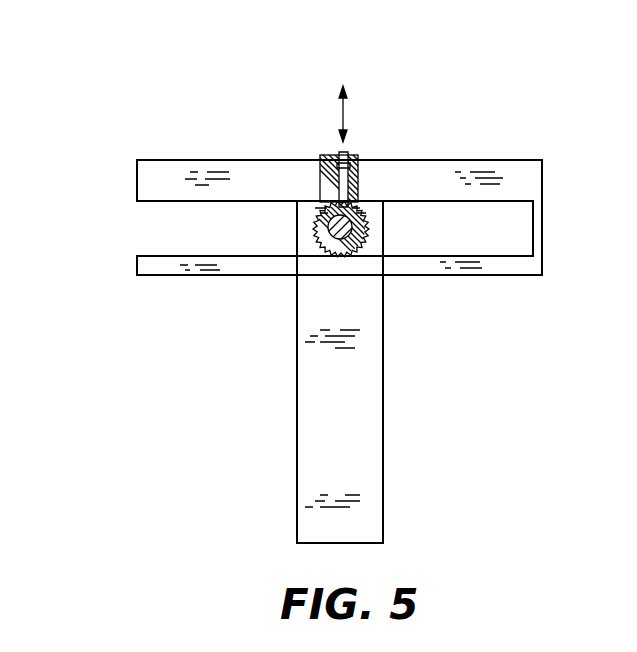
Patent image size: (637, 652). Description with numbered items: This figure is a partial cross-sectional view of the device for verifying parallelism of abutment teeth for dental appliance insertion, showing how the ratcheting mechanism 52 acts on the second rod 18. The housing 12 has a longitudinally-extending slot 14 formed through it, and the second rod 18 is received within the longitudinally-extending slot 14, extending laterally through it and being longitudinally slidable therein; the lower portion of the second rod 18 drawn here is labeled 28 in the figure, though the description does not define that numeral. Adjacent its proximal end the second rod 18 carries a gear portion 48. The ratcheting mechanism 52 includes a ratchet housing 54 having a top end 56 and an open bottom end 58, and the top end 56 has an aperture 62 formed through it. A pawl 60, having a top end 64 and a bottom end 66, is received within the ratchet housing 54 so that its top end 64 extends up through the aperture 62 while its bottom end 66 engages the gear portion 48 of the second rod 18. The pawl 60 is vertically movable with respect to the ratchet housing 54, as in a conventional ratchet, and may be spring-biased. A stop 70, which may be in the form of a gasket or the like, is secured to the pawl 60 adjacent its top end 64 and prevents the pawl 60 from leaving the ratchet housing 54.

The housing 12 is at (167, 160).
The longitudinally-extending slot 14 is at (136, 225).
The second rod 18 is at (330, 243).
The post 28 is at (385, 530).
The gear portion 48 is at (370, 232).
The ratcheting mechanism 52 is at (358, 165).
The ratchet housing 54 is at (358, 190).
The top end 56 is at (320, 170).
The open bottom end 58 is at (298, 207).
The pawl 60 is at (304, 206).
The aperture 62 is at (352, 153).
The top end 64 is at (330, 156).
The bottom end 66 is at (368, 218).
The stop 70 is at (358, 168).